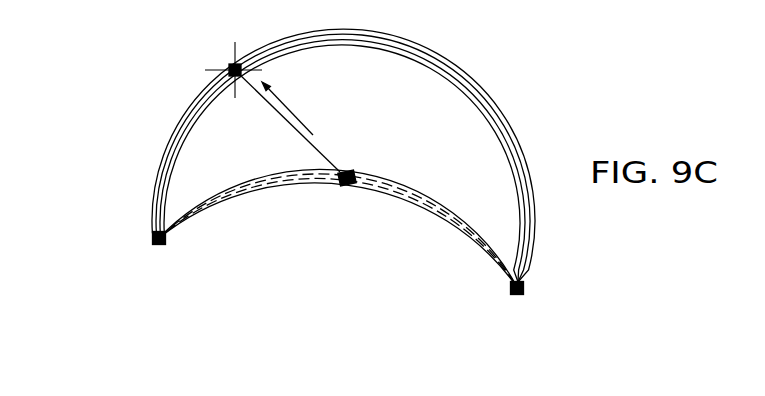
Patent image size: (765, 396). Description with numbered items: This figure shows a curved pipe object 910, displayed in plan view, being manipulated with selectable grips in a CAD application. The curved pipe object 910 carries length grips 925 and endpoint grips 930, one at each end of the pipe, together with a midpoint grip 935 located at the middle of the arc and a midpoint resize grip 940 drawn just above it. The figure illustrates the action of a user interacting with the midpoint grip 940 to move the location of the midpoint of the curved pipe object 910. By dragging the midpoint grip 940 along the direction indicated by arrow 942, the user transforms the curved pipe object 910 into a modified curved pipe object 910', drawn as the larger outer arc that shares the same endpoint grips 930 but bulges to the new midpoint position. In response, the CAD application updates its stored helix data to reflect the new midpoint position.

The modified curved pipe object 910' is at (353, 150).
The curved pipe object 910 is at (338, 212).
The endpoint grips 930 is at (231, 66).
The midpoint grip 935 is at (347, 186).
The midpoint resize grip 940 is at (354, 152).
The arrow 942 is at (290, 108).
The length grips 925 is at (140, 258).